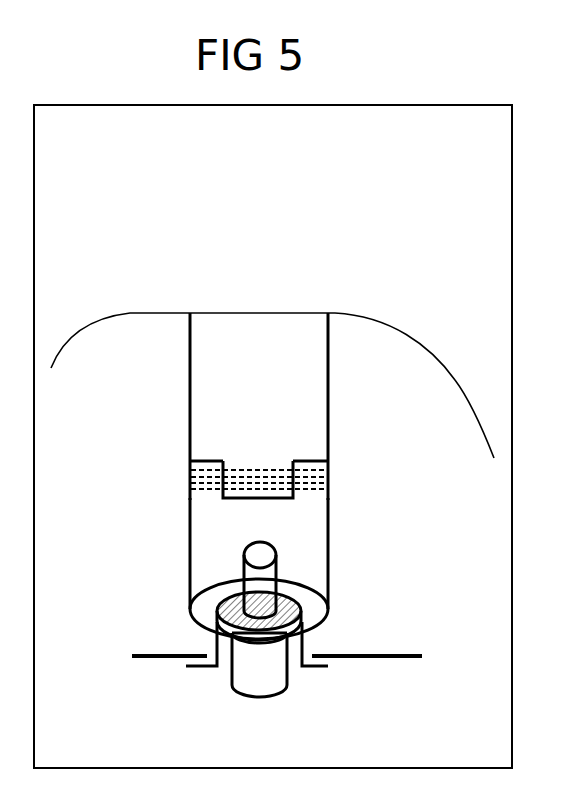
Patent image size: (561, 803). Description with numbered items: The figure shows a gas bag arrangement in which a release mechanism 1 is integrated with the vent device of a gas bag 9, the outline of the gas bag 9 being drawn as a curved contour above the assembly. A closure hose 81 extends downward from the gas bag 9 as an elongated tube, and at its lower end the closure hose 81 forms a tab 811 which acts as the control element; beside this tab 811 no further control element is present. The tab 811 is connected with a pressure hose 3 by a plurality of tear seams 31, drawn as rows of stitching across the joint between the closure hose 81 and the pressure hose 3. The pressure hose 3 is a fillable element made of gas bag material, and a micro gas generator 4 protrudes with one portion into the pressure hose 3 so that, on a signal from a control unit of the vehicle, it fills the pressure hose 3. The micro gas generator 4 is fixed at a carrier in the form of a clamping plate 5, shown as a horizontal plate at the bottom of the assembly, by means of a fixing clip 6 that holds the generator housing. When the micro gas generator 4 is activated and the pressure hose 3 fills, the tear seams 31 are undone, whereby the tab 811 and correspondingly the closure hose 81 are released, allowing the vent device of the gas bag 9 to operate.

The release mechanism 1 is at (414, 524).
The pressure hose 3 is at (308, 557).
The micro gas generator 4 is at (263, 678).
The clamping plate 5 is at (397, 653).
The fixing clip 6 is at (317, 670).
The gas bag 9 is at (377, 322).
The tear seams 31 is at (192, 470).
The closure hose 81 is at (315, 393).
The tab 811 is at (282, 490).